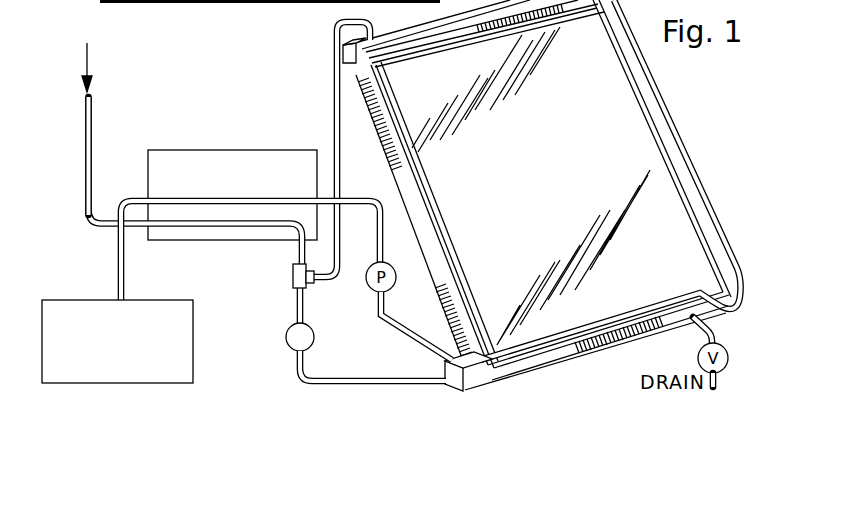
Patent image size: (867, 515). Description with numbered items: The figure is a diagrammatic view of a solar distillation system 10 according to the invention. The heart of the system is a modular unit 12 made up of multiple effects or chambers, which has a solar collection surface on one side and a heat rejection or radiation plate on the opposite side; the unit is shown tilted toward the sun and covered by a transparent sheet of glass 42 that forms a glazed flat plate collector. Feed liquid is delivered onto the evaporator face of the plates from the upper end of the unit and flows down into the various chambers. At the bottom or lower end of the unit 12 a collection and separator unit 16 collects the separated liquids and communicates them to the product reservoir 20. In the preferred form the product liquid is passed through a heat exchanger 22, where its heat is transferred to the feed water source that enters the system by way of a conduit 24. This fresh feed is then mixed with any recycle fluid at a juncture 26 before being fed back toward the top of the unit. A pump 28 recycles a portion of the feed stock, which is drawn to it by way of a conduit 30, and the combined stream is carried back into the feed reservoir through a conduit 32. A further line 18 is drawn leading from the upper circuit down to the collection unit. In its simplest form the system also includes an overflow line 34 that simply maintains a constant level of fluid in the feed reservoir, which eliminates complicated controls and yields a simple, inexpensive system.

The solar distillation system 10 is at (660, 133).
The modular unit 12 is at (392, 172).
The collection and separator unit 16 is at (600, 344).
The feed line to inlet block 18 is at (424, 337).
The product reservoir 20 is at (157, 298).
The heat exchanger 22 is at (237, 150).
The conduit 24 is at (91, 143).
The juncture 26 is at (292, 281).
The pump 28 is at (286, 339).
The conduit 30 is at (374, 377).
The conduit 32 is at (333, 77).
The overflow line 34 is at (695, 179).
The glass 42 is at (678, 231).